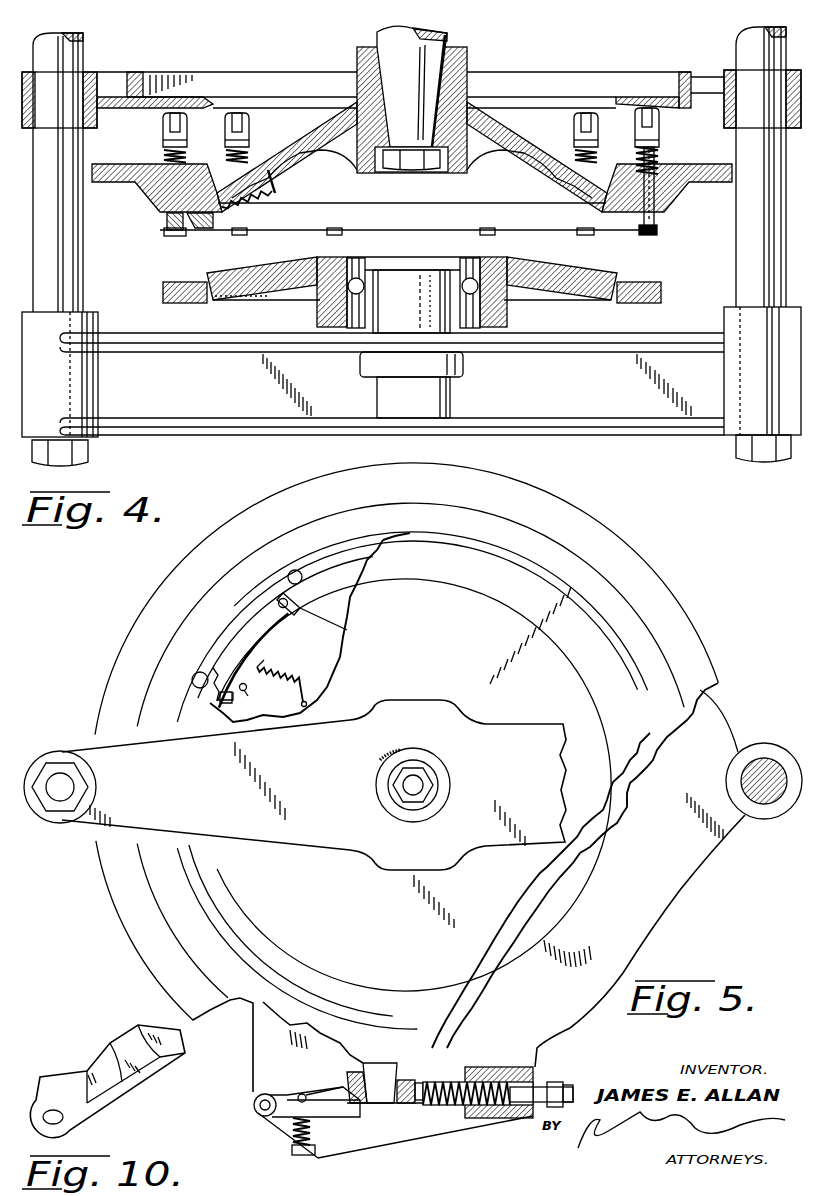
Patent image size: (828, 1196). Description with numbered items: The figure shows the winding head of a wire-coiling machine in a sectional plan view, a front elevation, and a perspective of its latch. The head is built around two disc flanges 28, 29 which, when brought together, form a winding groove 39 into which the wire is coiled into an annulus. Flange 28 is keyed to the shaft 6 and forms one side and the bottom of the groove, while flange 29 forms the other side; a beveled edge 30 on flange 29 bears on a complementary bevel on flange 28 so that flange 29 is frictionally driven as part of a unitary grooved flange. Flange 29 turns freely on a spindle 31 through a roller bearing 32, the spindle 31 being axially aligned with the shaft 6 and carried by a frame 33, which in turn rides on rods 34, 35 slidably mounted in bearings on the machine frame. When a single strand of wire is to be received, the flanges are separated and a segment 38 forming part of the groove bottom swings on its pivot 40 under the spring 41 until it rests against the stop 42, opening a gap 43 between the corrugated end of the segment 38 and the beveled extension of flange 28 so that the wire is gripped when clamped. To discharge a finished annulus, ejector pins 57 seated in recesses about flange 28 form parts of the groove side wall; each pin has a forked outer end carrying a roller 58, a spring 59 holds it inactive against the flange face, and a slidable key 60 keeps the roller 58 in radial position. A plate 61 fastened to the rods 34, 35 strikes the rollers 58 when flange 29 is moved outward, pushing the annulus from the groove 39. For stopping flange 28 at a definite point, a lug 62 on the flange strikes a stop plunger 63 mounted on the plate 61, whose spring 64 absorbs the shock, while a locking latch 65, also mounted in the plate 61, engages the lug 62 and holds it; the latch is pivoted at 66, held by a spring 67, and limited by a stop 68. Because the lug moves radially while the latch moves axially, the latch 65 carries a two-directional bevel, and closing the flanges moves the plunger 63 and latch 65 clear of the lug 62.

In FIG. 4, the shaft 6 is at (452, 42).
In FIG. 4, the disc flange 28 is at (140, 178).
In FIG. 5, the disc flange 28 is at (652, 583).
In FIG. 4, the disc flange 29 is at (166, 300).
In FIG. 5, the disc flange 29 is at (594, 678).
In FIG. 4, the beveled edge 30 is at (200, 273).
In FIG. 4, the spindle 31 is at (394, 278).
In FIG. 5, the spindle 31 is at (420, 783).
In FIG. 4, the roller bearing 32 is at (333, 288).
In FIG. 4, the frame 33 is at (411, 386).
In FIG. 5, the frame 33 is at (283, 840).
In FIG. 4, the rod 34 is at (80, 262).
In FIG. 5, the rod 34 is at (60, 778).
In FIG. 4, the rod 35 is at (742, 266).
In FIG. 5, the rod 35 is at (764, 760).
In FIG. 4, the segment 38 is at (184, 231).
In FIG. 5, the segment 38 is at (259, 622).
In FIG. 5, the winding groove 39 is at (337, 572).
In FIG. 5, the pivot 40 is at (339, 627).
In FIG. 4, the spring 41 is at (258, 212).
In FIG. 5, the spring 41 is at (320, 676).
In FIG. 4, the stop 42 is at (208, 230).
In FIG. 5, the stop 42 is at (258, 703).
In FIG. 5, the gap 43 is at (220, 663).
In FIG. 4, the ejector pins 57 is at (659, 229).
In FIG. 5, the ejector pins 57 is at (290, 571).
In FIG. 4, the roller 58 is at (660, 118).
In FIG. 4, the spring 59 is at (664, 152).
In FIG. 4, the slidable key 60 is at (652, 190).
In FIG. 4, the plate 61 is at (246, 68).
In FIG. 5, the plate 61 is at (657, 913).
In FIG. 5, the lug 62 is at (415, 1078).
In FIG. 5, the stop plunger 63 is at (433, 1082).
In FIG. 5, the spring 64 is at (450, 1108).
In FIG. 5, the locking latch 65 is at (355, 1120).
In FIG. 10, the locking latch 65 is at (125, 1084).
In FIG. 5, the pivot 66 is at (254, 1105).
In FIG. 5, the spring 67 is at (293, 1135).
In FIG. 5, the stop 68 is at (302, 1094).